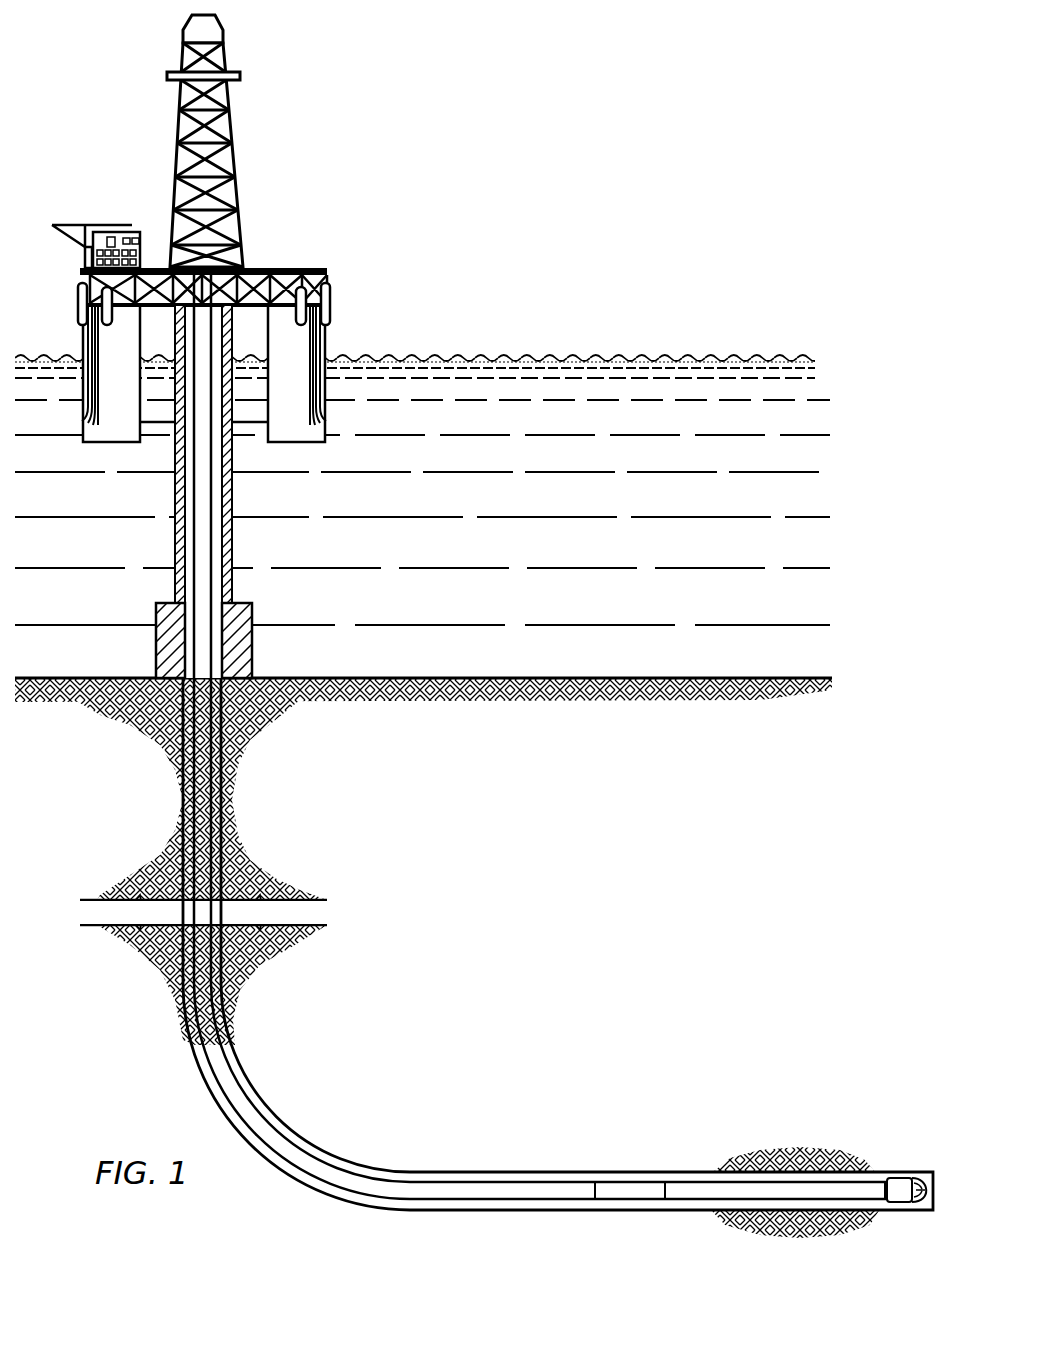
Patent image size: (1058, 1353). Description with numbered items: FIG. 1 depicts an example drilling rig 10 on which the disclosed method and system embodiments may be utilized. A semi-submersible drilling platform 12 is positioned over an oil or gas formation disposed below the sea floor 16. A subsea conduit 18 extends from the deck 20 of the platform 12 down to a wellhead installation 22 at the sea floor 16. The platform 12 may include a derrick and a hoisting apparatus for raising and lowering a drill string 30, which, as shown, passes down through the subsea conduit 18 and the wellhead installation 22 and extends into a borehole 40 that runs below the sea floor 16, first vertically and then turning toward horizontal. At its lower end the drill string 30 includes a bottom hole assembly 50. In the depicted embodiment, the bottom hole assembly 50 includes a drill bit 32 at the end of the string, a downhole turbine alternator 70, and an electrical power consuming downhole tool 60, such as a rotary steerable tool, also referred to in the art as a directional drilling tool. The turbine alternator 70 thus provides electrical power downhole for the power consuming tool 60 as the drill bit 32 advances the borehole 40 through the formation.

The drilling rig 10 is at (329, 141).
The semi-submersible drilling platform 12 is at (310, 268).
The deck 20 is at (333, 306).
The drill string 30 is at (203, 454).
The subsea conduit 18 is at (233, 540).
The wellhead installation 22 is at (238, 601).
The sea floor 16 is at (483, 678).
The borehole 40 is at (181, 803).
The downhole turbine alternator 70 is at (628, 1188).
The electrical power consuming downhole tool 60 is at (698, 1188).
The drill bit 32 is at (906, 1180).
The bottom hole assembly 50 is at (930, 1238).